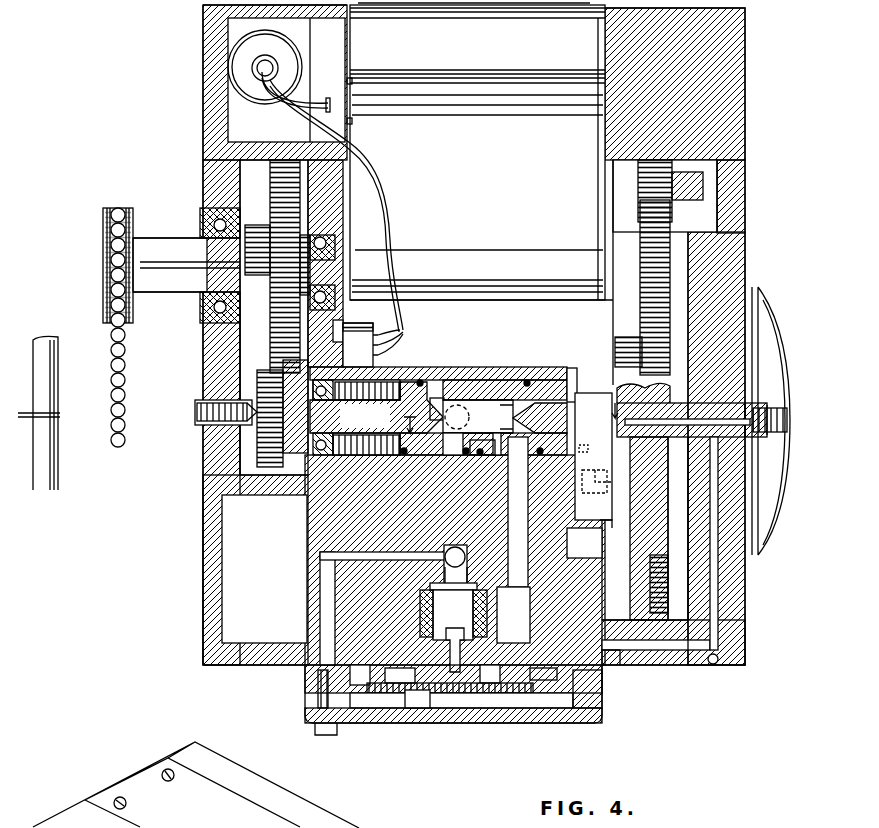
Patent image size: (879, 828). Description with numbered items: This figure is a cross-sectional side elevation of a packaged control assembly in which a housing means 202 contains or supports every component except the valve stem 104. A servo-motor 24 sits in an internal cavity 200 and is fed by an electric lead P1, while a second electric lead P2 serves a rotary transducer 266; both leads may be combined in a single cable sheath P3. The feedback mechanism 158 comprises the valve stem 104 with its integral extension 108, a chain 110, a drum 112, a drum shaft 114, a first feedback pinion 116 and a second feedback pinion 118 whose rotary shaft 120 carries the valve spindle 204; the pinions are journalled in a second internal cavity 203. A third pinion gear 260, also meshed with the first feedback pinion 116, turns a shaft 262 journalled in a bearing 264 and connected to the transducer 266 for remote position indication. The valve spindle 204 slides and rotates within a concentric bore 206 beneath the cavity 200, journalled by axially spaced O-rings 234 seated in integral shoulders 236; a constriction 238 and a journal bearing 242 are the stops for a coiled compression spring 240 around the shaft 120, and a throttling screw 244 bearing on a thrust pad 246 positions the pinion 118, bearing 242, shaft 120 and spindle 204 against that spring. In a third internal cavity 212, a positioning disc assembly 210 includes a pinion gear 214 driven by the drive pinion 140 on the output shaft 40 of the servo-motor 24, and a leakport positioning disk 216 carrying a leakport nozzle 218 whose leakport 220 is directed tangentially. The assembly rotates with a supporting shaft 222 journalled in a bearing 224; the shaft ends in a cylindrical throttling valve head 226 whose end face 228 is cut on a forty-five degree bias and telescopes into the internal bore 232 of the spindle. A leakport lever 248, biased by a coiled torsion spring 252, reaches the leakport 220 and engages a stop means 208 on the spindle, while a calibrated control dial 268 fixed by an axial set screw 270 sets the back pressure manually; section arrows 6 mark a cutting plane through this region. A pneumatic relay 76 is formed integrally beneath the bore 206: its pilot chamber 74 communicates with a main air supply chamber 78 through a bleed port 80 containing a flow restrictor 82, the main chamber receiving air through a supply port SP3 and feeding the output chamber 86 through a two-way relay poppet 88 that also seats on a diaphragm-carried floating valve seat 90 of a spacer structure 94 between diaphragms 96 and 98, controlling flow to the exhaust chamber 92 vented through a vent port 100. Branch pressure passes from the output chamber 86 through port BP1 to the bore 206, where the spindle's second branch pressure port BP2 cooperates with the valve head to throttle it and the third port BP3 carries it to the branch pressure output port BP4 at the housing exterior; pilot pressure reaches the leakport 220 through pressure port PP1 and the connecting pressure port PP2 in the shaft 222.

The housing means 202 is at (753, 70).
The internal cavity 200 is at (460, 57).
The servo-motor 24 is at (461, 200).
The cable sheath P3 is at (252, 46).
The electric lead P1 is at (328, 100).
The electric lead P2 is at (290, 123).
The second internal cavity 203 is at (239, 187).
The first feedback pinion 116 is at (233, 205).
The drum shaft 114 is at (182, 238).
The drum 112 is at (103, 252).
The chain 110 is at (110, 351).
The feedback mechanism 158 is at (152, 323).
The valve stem 104 is at (33, 345).
The integral extension 108 is at (50, 418).
The third pinion gear 260 is at (255, 352).
The thrust pad 246 is at (258, 425).
The second feedback pinion 118 is at (233, 395).
The throttling screw 244 is at (200, 414).
The shaft 262 is at (330, 333).
The bearing 264 is at (338, 328).
The rotary transducer 266 is at (373, 330).
The drive pinion 140 is at (703, 198).
The output shaft 40 is at (626, 205).
The pinion gear 214 is at (648, 308).
The leakport positioning disk 216 is at (625, 337).
The positioning disc assembly 210 is at (686, 300).
The calibrated control dial 268 is at (783, 344).
The bearing 224 is at (745, 377).
The axial set screw 270 is at (787, 420).
The pressure port PP1 is at (718, 592).
The supporting shaft 222 is at (678, 437).
The third internal cavity 212 is at (606, 573).
The valve spindle 204 is at (492, 388).
The concentric bore 206 is at (571, 380).
The coiled torsion spring 252 is at (613, 385).
The radially symmetrical constriction 238 is at (395, 383).
The journal bearing 242 is at (332, 456).
The coiled compression spring 240 is at (368, 456).
The rotary shaft 120 is at (347, 420).
The branch pressure output port BP4 is at (439, 405).
The internal bore 232 is at (457, 403).
The third branch pressure port BP3 is at (467, 420).
The end face 228 is at (470, 436).
The cylindrical throttling valve head 226 is at (567, 426).
The leakport nozzle 218 is at (608, 498).
The connecting pressure port PP2 is at (630, 437).
The leakport 220 is at (607, 472).
The leakport lever 248 is at (612, 523).
The O-rings 234 is at (541, 455).
The radially extending integral shoulders 236 is at (479, 456).
The second branch pressure port BP2 is at (483, 452).
The stop means 208 is at (530, 462).
The section marker 6 is at (511, 419).
The bleed port 80 is at (328, 609).
The supply port SP3 is at (463, 547).
The main air supply chamber 78 is at (470, 578).
The two-way relay poppet 88 is at (463, 627).
The output chamber 86 is at (502, 618).
The pressure port BP1 is at (540, 543).
The floating valve seat 90 is at (446, 658).
The in-line flow restrictor 82 is at (305, 684).
The diaphragm 98 is at (318, 705).
The vent port 100 is at (598, 686).
The diaphragm 96 is at (527, 668).
The pilot chamber 74 is at (520, 708).
The exhaust chamber 92 is at (550, 690).
The spacer structure 94 is at (427, 698).
The pneumatic relay 76 is at (378, 727).